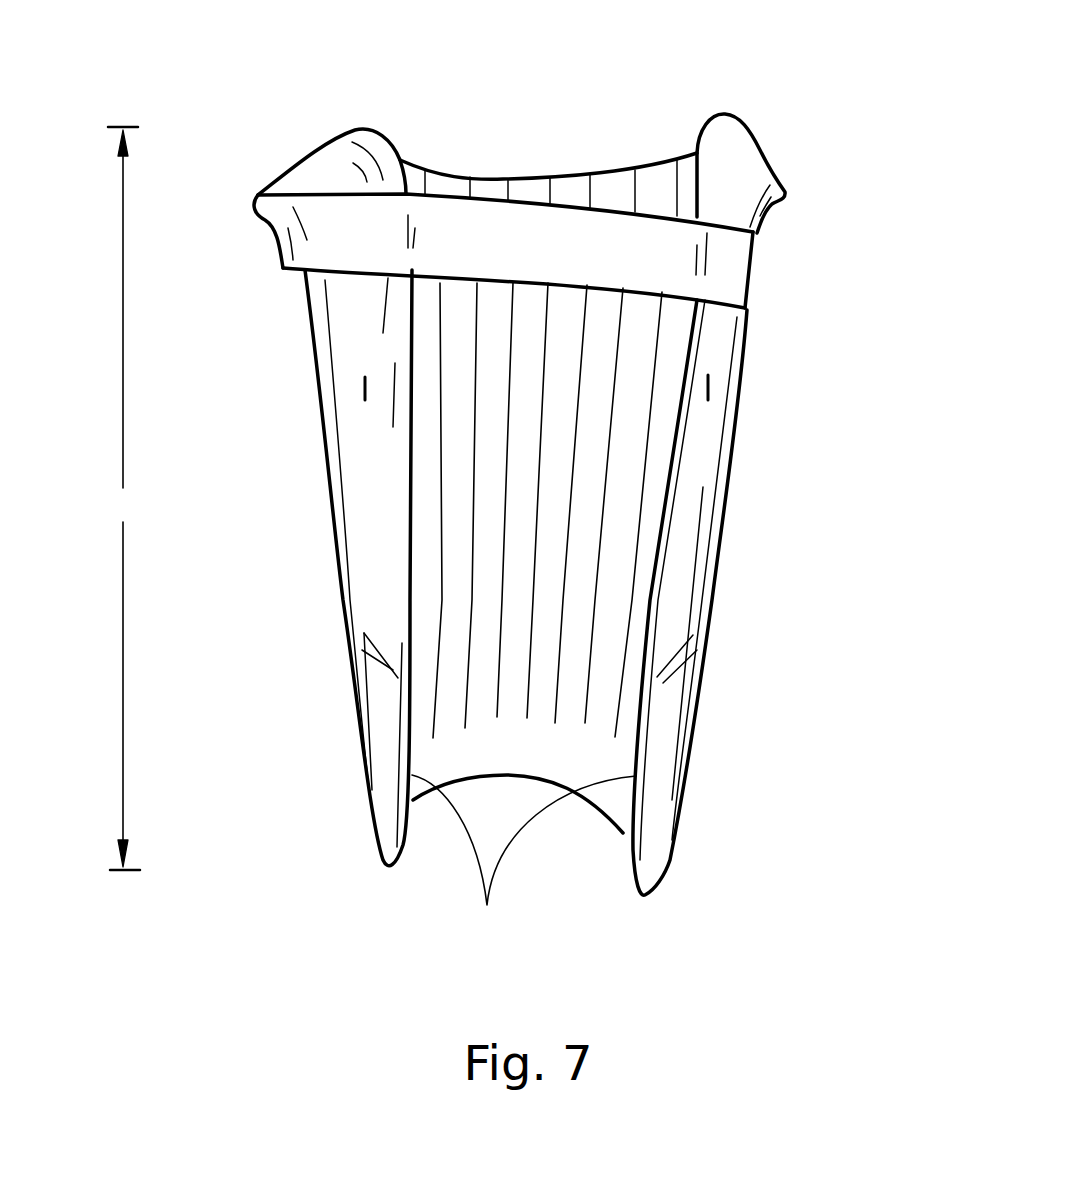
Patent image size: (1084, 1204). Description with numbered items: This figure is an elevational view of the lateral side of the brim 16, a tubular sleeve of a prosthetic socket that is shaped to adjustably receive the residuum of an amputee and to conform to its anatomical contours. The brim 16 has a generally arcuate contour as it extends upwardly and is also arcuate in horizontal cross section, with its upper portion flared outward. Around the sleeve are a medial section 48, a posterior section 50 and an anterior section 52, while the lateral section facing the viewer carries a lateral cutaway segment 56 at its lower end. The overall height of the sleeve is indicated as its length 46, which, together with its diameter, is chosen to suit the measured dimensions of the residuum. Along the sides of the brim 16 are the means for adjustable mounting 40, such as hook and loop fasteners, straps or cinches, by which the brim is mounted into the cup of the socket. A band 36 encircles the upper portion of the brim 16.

The brim 16 is at (790, 105).
The band 36 is at (740, 263).
The means for adjustable mounting 40 is at (372, 713).
The length 46 is at (123, 498).
The medial section 48 is at (503, 178).
The posterior section 50 is at (363, 388).
The anterior section 52 is at (710, 387).
The lateral cutaway segment 56 is at (524, 857).